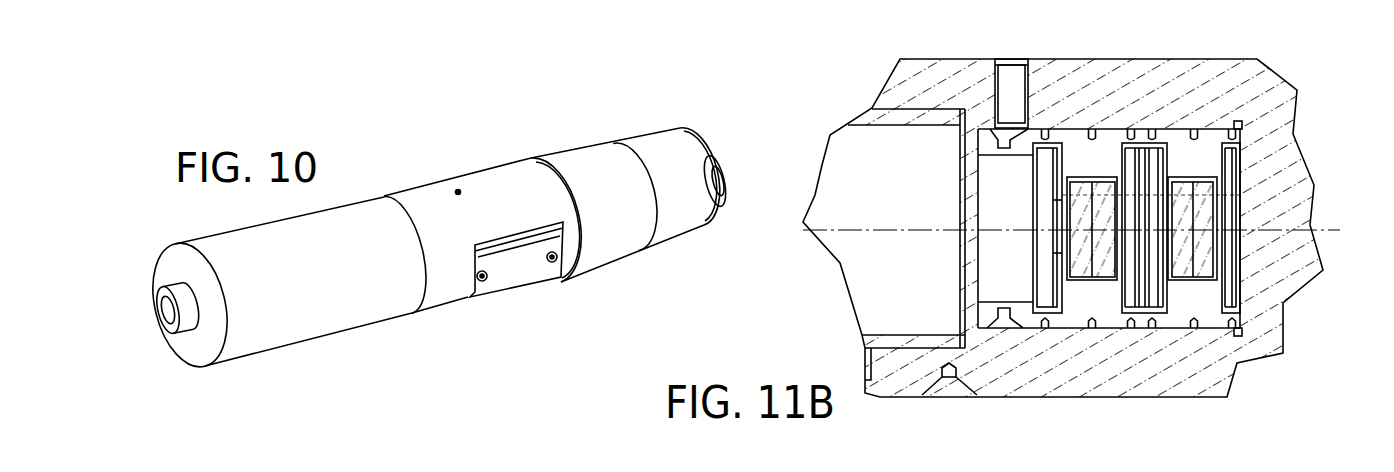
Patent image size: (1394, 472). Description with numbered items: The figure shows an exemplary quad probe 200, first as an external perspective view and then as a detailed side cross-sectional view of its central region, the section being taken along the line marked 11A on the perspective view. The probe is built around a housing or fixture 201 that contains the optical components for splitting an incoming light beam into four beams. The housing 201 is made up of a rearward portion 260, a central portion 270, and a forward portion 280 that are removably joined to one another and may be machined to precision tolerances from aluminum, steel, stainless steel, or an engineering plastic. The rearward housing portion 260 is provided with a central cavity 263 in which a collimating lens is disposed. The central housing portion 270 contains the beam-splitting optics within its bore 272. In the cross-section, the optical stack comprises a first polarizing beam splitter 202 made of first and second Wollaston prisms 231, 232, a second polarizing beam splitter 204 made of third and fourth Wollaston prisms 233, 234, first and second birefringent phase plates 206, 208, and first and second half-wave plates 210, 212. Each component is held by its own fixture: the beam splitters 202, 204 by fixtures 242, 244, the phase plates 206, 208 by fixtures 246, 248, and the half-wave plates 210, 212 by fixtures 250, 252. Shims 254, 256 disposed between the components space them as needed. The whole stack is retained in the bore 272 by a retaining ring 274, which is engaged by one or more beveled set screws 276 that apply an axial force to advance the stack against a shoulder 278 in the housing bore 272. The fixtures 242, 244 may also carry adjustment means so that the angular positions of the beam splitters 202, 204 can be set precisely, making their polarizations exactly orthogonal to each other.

In FIG. 10, the quad probe 200 is at (527, 84).
In FIG. 10, the housing or fixture 201 is at (605, 122).
In FIG. 10, the rearward housing portion 260 is at (303, 343).
In FIG. 10, the central housing portion 270 is at (440, 292).
In FIG. 10, the forward housing portion 280 is at (672, 242).
In FIG. 10, the section line 11A is at (413, 195).
In FIG. 11B, the first polarizing beam splitter 202 is at (1101, 158).
In FIG. 11B, the second polarizing beam splitter 204 is at (1203, 158).
In FIG. 11B, the first birefringent phase plate 206 is at (1130, 295).
In FIG. 11B, the second birefringent phase plate 208 is at (1230, 263).
In FIG. 11B, the first half-wave plate 210 is at (1045, 170).
In FIG. 11B, the second half-wave plate 212 is at (1155, 295).
In FIG. 11B, the first Wollaston prism 231 is at (1083, 263).
In FIG. 11B, the second Wollaston prism 232 is at (1103, 263).
In FIG. 11B, the third Wollaston prism 233 is at (1177, 265).
In FIG. 11B, the fourth Wollaston prism 234 is at (1202, 263).
In FIG. 11B, the fixture 242 is at (1075, 141).
In FIG. 11B, the fixture 244 is at (1212, 136).
In FIG. 11B, the fixture 246 is at (1125, 141).
In FIG. 11B, the fixture 248 is at (1237, 138).
In FIG. 11B, the fixture 250 is at (1053, 135).
In FIG. 11B, the fixture 252 is at (1162, 135).
In FIG. 11B, the shim 254 is at (1062, 194).
In FIG. 11B, the shim 256 is at (1232, 176).
In FIG. 11B, the central cavity 263 is at (842, 170).
In FIG. 11B, the bore 272 is at (1297, 243).
In FIG. 11B, the retaining ring 274 is at (1000, 301).
In FIG. 11B, the beveled set screw 276 is at (1009, 92).
In FIG. 11B, the shoulder 278 is at (1243, 323).